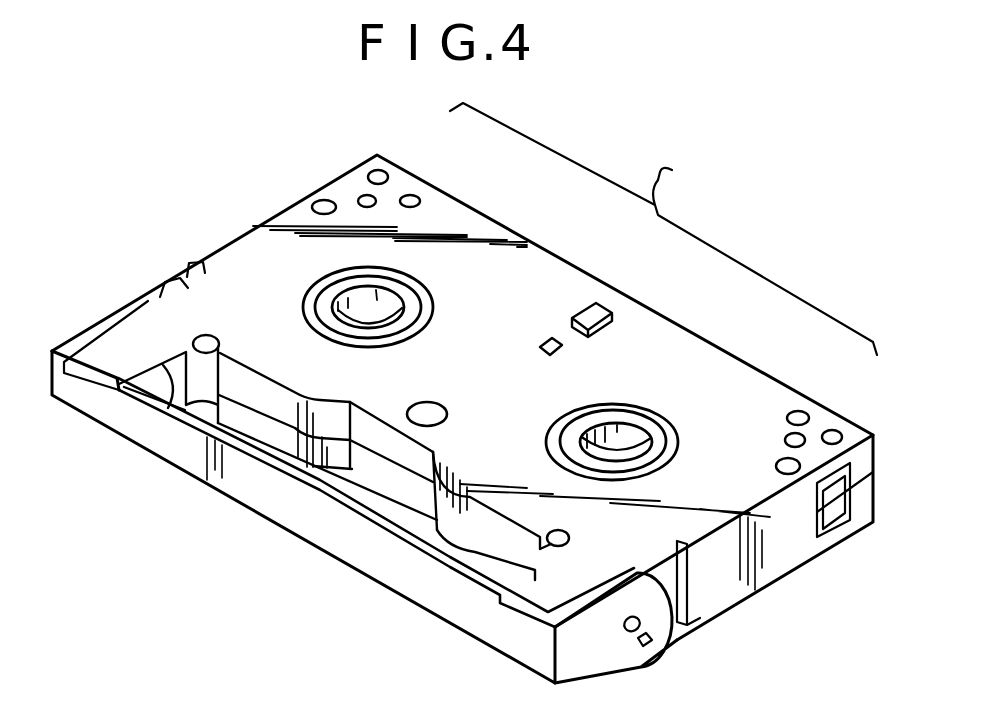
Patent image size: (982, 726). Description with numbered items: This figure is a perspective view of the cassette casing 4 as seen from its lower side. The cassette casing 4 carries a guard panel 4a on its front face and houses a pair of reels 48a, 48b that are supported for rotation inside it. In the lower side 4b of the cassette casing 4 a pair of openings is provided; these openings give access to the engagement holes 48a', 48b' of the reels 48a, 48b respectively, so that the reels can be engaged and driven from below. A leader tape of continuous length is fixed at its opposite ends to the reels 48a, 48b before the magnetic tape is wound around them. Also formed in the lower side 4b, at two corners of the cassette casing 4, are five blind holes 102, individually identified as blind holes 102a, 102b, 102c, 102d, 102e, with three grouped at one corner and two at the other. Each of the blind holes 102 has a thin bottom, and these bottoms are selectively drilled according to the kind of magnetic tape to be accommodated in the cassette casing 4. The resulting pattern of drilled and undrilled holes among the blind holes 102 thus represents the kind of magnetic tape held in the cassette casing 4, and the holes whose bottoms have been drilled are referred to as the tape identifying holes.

The cassette casing 4 is at (263, 245).
The guard panel 4a is at (340, 543).
The lower side 4b is at (477, 378).
The reel 48a is at (410, 307).
The engagement hole 48a' is at (402, 291).
The reel 48b is at (612, 417).
The engagement hole 48b' is at (574, 425).
The blind holes 102 is at (663, 229).
The blind hole 102a is at (383, 173).
The blind hole 102b is at (372, 198).
The blind hole 102c is at (418, 204).
The blind hole 102d is at (787, 410).
The blind hole 102e is at (800, 437).